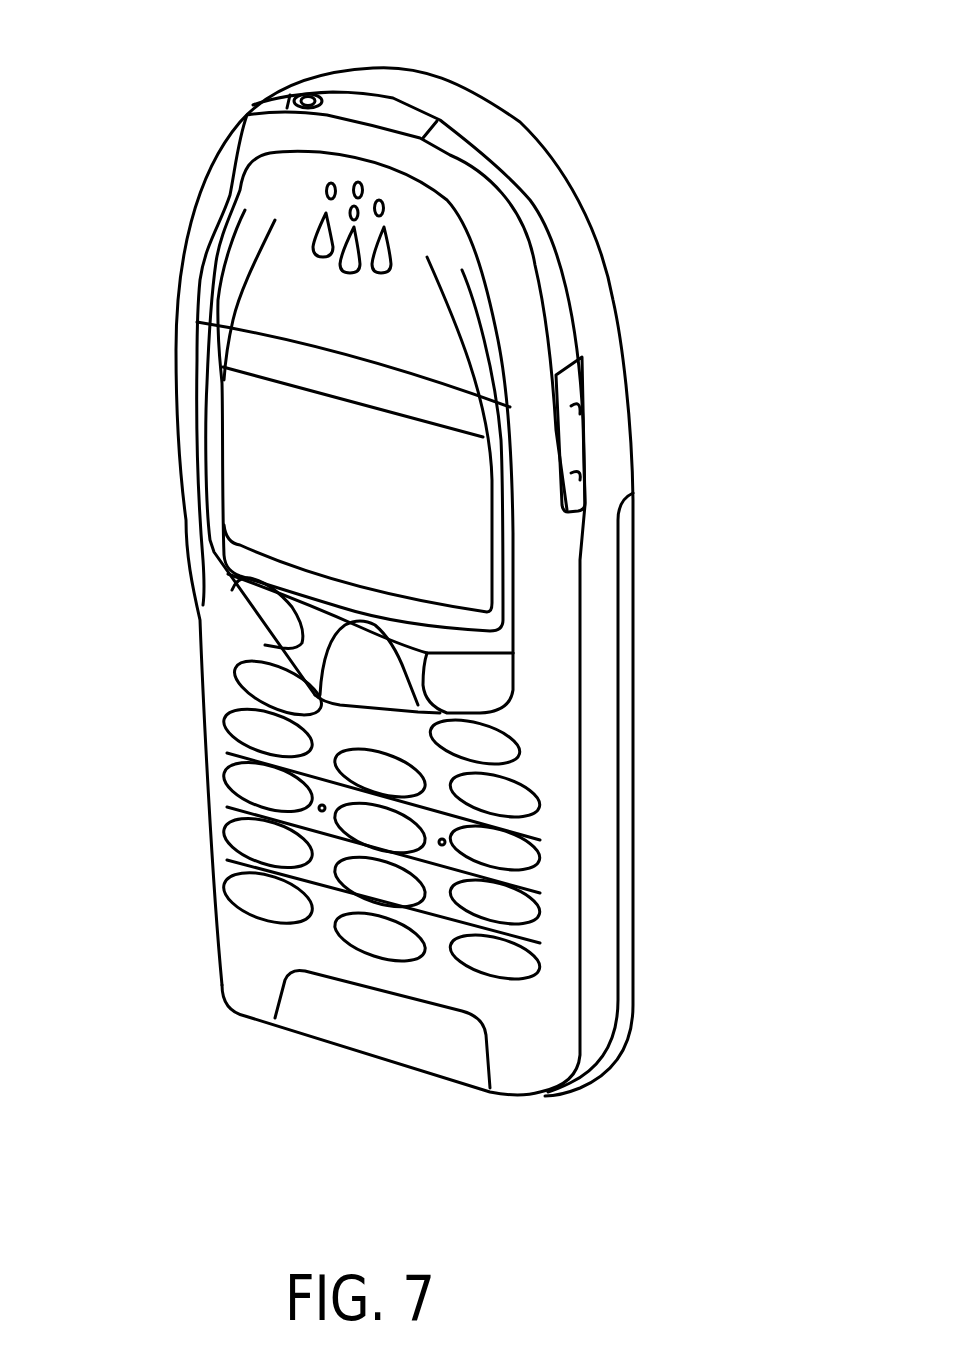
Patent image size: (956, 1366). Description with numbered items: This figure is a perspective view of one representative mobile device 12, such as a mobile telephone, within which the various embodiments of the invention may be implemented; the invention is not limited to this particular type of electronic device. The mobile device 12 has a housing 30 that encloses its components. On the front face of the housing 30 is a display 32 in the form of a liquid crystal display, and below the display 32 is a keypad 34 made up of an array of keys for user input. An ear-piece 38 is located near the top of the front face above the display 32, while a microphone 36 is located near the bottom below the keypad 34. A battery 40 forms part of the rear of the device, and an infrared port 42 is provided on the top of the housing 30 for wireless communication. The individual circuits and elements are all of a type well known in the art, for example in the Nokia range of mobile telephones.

The mobile device 12 is at (550, 80).
The housing 30 is at (586, 273).
The display 32 is at (458, 540).
The keypad 34 is at (495, 963).
The microphone 36 is at (307, 1013).
The ear-piece 38 is at (338, 222).
The battery 40 is at (624, 942).
The infrared port 42 is at (380, 110).